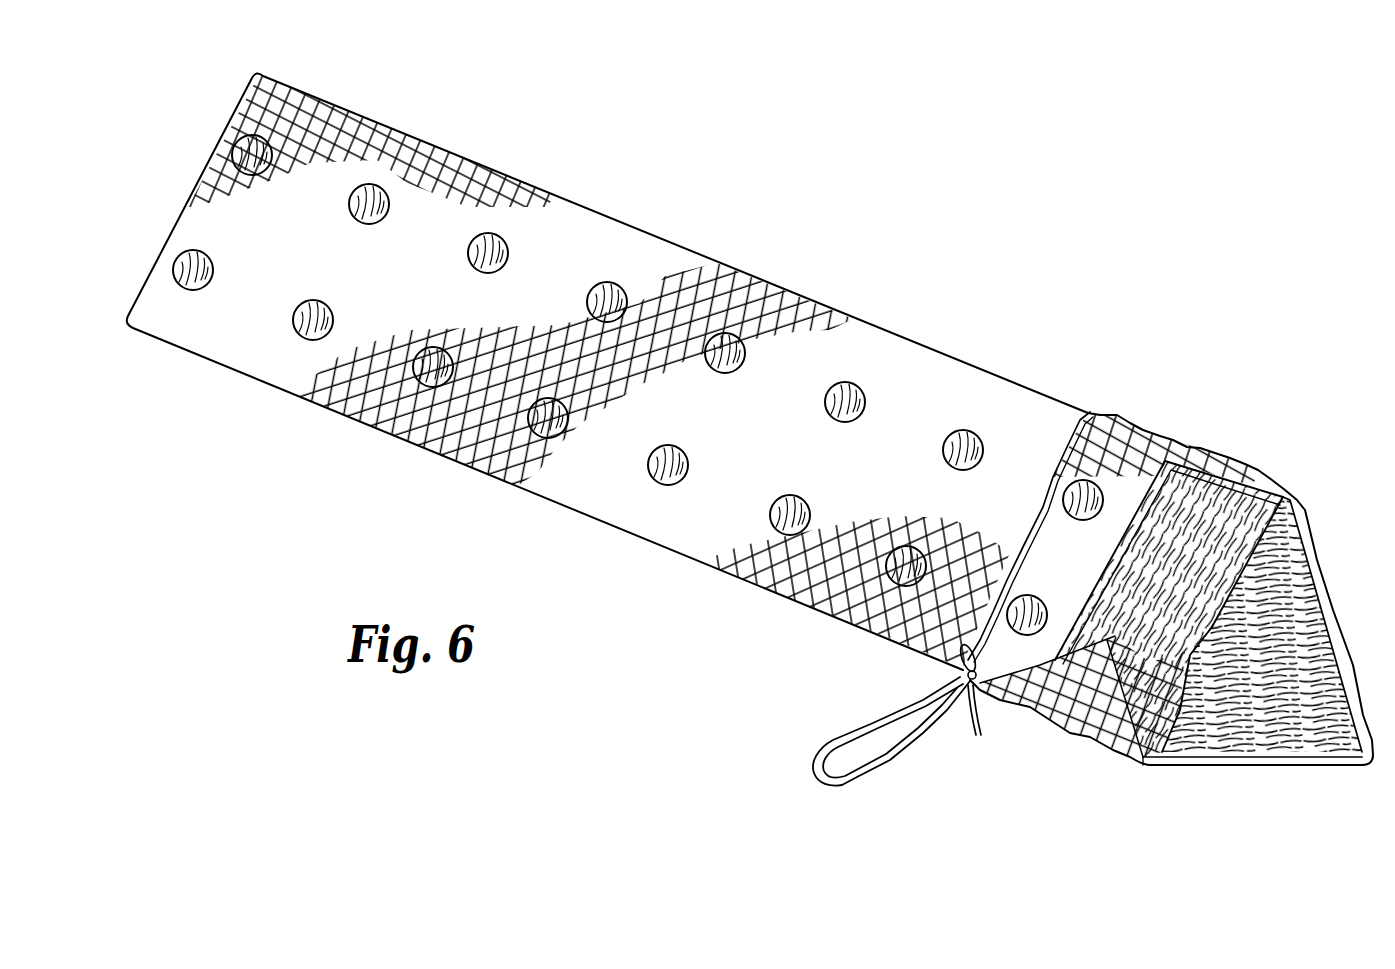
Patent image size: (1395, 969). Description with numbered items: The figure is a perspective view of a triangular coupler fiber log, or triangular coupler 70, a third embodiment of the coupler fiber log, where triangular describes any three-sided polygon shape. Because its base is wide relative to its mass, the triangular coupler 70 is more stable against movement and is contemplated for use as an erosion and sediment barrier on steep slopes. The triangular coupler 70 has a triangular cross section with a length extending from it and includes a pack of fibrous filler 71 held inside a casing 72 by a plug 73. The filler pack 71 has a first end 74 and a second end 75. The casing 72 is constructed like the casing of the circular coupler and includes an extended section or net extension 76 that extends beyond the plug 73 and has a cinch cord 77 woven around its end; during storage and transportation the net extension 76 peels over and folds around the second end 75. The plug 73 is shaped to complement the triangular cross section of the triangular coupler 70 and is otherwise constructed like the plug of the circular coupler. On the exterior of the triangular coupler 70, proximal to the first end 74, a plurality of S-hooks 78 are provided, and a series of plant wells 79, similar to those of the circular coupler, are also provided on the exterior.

The triangular coupler fiber log 70 is at (835, 185).
The pack of fibrous filler 71 is at (1290, 737).
The casing 72 is at (313, 383).
The plug 73 is at (1283, 585).
The first end 74 is at (237, 100).
The second end 75 is at (1177, 440).
The net extension 76 is at (1058, 722).
The cinch cord 77 is at (837, 745).
The S-hooks 78 is at (443, 160).
The plant wells 79 is at (598, 289).